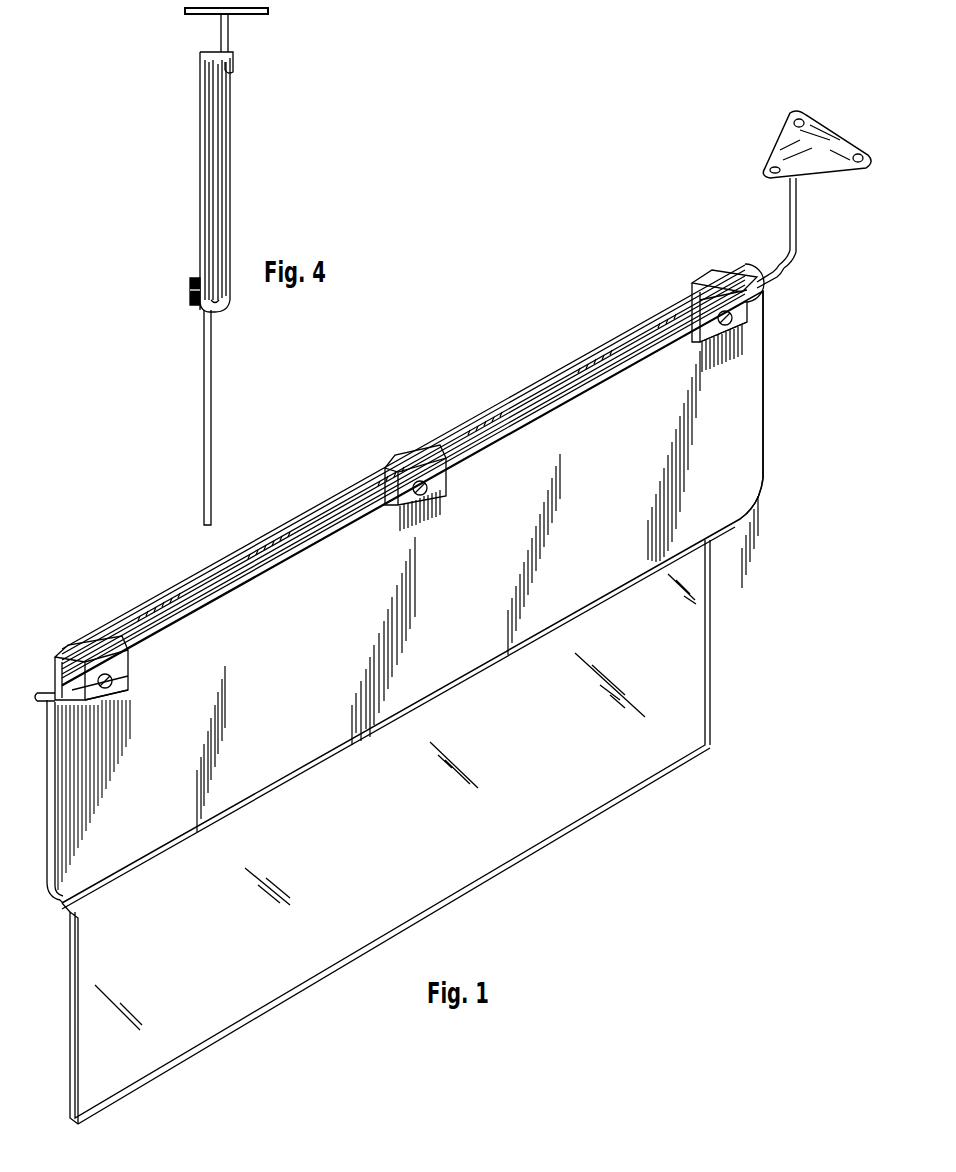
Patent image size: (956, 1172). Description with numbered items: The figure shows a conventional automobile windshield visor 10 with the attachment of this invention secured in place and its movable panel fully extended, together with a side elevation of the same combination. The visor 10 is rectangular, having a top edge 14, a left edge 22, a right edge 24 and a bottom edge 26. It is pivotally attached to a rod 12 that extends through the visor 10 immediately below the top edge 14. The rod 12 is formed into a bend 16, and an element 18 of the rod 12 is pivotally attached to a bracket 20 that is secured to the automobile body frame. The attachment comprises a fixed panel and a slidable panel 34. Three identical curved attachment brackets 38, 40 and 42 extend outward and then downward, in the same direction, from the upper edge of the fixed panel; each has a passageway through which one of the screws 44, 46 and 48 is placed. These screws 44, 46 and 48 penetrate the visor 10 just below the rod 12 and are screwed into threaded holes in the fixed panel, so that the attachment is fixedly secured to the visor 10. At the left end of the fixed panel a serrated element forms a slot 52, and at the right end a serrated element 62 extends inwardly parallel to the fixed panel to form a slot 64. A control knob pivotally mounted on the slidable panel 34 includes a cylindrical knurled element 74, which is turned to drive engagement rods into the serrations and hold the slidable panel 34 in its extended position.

In FIG. 1, the windshield visor 10 is at (752, 410).
In FIG. 1, the rod 12 is at (773, 283).
In FIG. 1, the top edge 14 is at (632, 355).
In FIG. 1, the bend 16 is at (796, 263).
In FIG. 4, the element 18 is at (220, 42).
In FIG. 1, the element 18 is at (798, 197).
In FIG. 4, the bracket 20 is at (258, 16).
In FIG. 1, the bracket 20 is at (782, 140).
In FIG. 1, the left edge 22 is at (768, 460).
In FIG. 1, the right edge 24 is at (62, 830).
In FIG. 1, the bottom edge 26 is at (742, 521).
In FIG. 4, the slidable panel 34 is at (210, 432).
In FIG. 1, the slidable panel 34 is at (417, 823).
In FIG. 1, the curved attachment bracket 38 is at (728, 339).
In FIG. 1, the curved attachment bracket 40 is at (420, 512).
In FIG. 1, the curved attachment bracket 42 is at (114, 695).
In FIG. 1, the screw 44 is at (735, 327).
In FIG. 1, the screw 46 is at (430, 497).
In FIG. 1, the screw 48 is at (112, 684).
In FIG. 1, the slot 52 is at (702, 280).
In FIG. 4, the serrated element 62 is at (205, 160).
In FIG. 1, the slot 64 is at (70, 642).
In FIG. 4, the cylindrical knurled element 74 is at (188, 280).